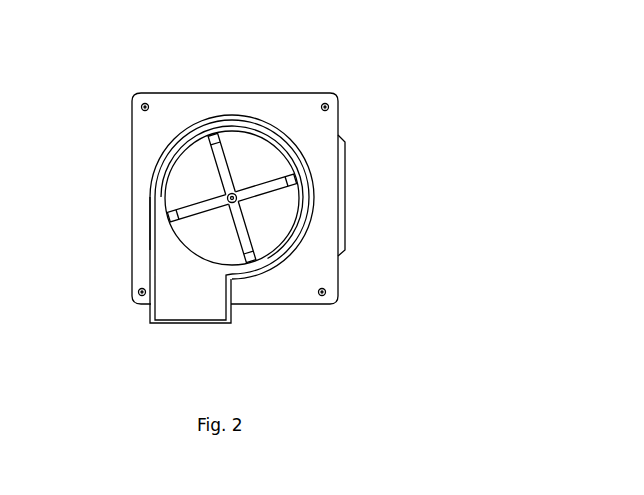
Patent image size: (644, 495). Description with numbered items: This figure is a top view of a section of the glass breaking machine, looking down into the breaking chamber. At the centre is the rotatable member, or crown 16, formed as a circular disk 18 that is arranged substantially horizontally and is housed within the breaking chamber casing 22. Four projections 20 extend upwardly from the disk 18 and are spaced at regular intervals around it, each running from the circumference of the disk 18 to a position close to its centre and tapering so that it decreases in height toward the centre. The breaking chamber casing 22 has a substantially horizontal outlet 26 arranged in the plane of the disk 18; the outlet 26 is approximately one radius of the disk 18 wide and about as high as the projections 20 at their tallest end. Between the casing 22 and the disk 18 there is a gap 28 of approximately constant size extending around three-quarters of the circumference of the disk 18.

The crown 16 is at (283, 132).
The circular disk 18 is at (240, 140).
The projections 20 is at (262, 245).
The breaking chamber casing 22 is at (182, 111).
The outlet 26 is at (193, 309).
The gap 28 is at (157, 188).